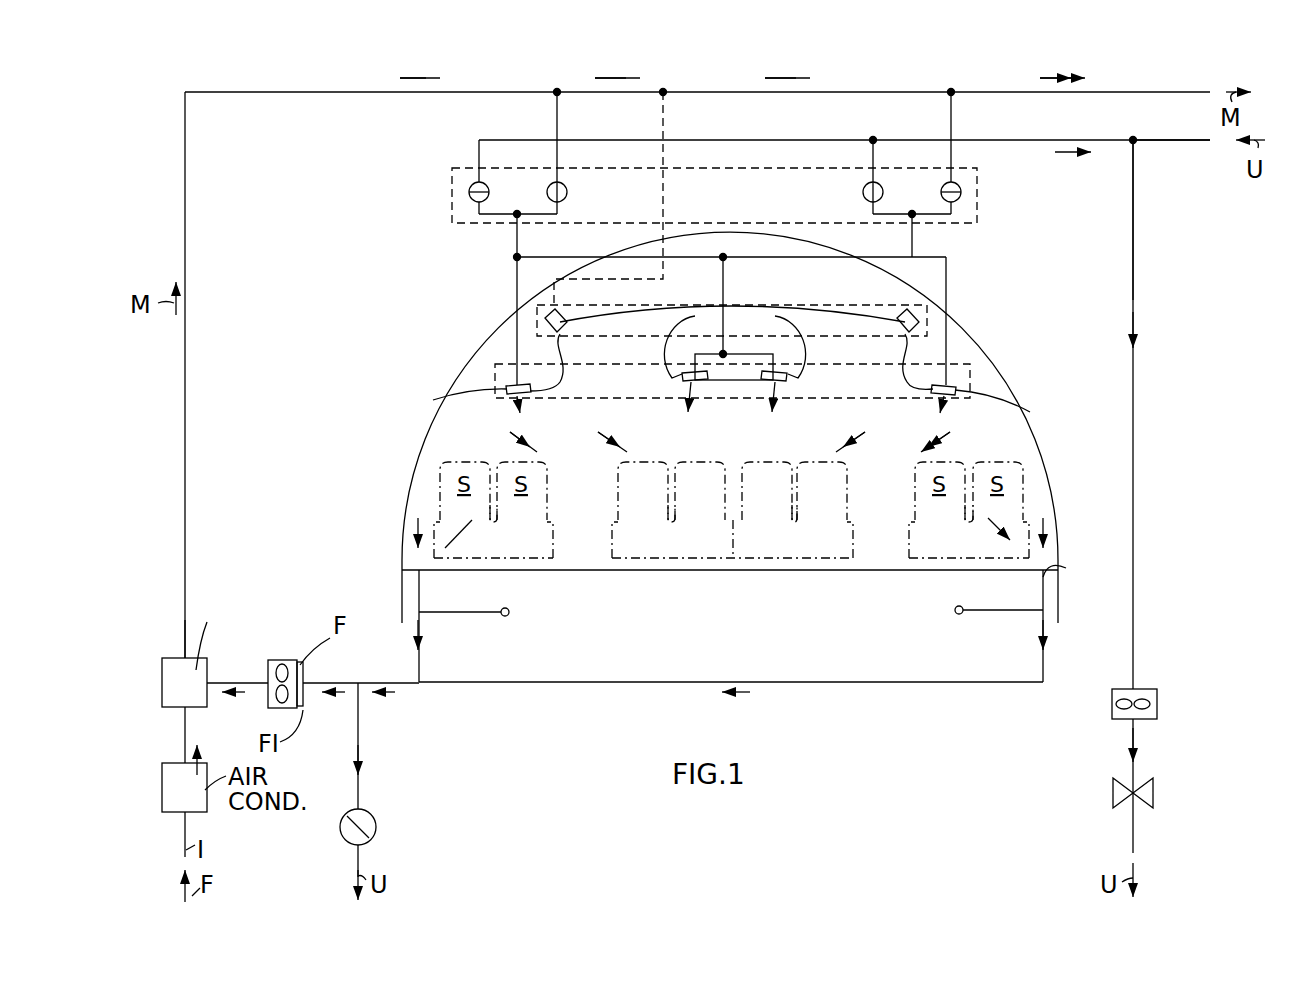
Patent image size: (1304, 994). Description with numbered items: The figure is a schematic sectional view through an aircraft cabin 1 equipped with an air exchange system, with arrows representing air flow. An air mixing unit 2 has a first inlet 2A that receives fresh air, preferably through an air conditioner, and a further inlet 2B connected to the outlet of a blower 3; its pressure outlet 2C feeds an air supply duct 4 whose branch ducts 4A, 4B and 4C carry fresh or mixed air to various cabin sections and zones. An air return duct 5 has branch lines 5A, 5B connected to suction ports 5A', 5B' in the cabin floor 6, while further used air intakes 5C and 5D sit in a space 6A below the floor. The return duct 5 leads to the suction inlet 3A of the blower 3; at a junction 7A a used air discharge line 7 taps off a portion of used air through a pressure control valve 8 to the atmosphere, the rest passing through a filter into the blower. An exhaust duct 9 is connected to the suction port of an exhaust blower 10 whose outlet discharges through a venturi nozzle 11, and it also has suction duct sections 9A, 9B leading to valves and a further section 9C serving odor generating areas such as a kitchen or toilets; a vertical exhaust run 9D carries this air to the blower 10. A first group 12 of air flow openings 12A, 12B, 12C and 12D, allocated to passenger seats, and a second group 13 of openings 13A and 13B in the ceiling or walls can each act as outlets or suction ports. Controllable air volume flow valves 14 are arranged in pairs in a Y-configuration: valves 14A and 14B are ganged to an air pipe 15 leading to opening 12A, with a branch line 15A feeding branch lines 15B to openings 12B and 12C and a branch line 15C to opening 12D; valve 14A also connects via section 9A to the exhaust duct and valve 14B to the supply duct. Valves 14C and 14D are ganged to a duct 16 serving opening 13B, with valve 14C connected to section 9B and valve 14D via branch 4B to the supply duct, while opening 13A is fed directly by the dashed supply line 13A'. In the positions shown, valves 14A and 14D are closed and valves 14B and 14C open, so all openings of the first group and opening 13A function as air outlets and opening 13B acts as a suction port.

The aircraft cabin 1 is at (408, 372).
The air mixing unit 2 is at (163, 682).
The first inlet 2A is at (184, 744).
The further inlet 2B is at (236, 682).
The pressure outlet 2C is at (184, 654).
The blower 3 is at (282, 660).
The suction inlet 3A is at (318, 683).
The air supply duct 4 is at (186, 205).
The branch duct 4A is at (556, 115).
The branch duct 4B is at (954, 120).
The branch duct 4C is at (1123, 92).
The air return duct 5 is at (810, 682).
The branch line 5A is at (442, 626).
The suction port 5A' is at (377, 562).
The branch line 5B is at (1021, 626).
The suction port 5B' is at (1077, 577).
The used air intake 5C is at (509, 611).
The used air intake 5D is at (955, 610).
The cabin floor 6 is at (660, 572).
The space below the cabin floor 6A is at (728, 636).
The used air discharge line 7 is at (360, 740).
The junction 7A is at (357, 690).
The pressure control valve 8 is at (340, 830).
The exhaust duct 9 is at (782, 140).
The suction duct section 9A is at (478, 152).
The suction duct section 9B is at (872, 155).
The exhaust duct section 9C is at (1172, 140).
The fresh air bypass duct 9D is at (1136, 145).
The exhaust blower 10 is at (1157, 703).
The venturi nozzle 11 is at (1153, 794).
The first group of air flow openings 12 is at (972, 372).
The air flow opening 12A is at (530, 395).
The air flow opening 12B is at (680, 380).
The air flow opening 12C is at (790, 380).
The air flow opening 12D is at (950, 397).
The second group of openings 13 is at (930, 308).
The air flow opening 13A is at (622, 334).
The dashed supply line 13A' is at (645, 197).
The air flow opening 13B is at (900, 315).
The controllable air volume flow valves 14 is at (978, 192).
The flow control valve 14A is at (468, 192).
The flow control valve 14B is at (567, 192).
The flow control valve 14C is at (863, 192).
The flow control valve 14D is at (958, 184).
The air pipe 15 is at (516, 295).
The branch line 15A is at (548, 257).
The branch lines 15B is at (726, 292).
The branch line 15C is at (947, 282).
The duct 16 is at (910, 244).